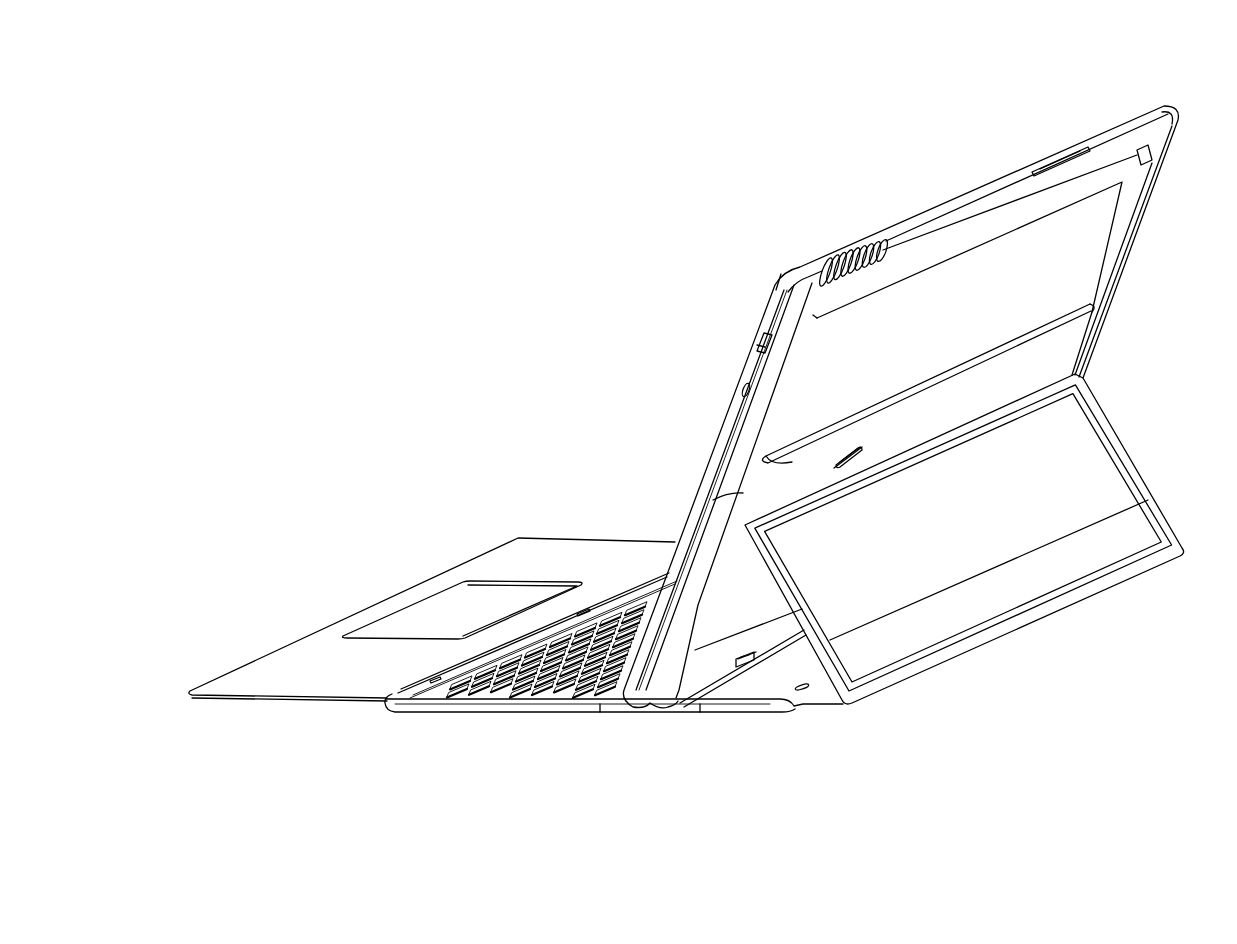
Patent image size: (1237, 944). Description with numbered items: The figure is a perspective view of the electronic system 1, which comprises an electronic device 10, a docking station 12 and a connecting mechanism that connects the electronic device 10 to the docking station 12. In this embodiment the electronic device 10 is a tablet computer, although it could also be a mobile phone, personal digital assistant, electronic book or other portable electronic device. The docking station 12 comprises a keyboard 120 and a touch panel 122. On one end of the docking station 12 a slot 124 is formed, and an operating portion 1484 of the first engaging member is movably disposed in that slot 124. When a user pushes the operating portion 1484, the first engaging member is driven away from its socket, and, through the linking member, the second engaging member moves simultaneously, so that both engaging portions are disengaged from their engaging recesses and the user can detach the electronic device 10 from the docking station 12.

The electronic system 1 is at (368, 150).
The electronic device 10 is at (946, 205).
The docking station 12 is at (1110, 428).
The keyboard 120 is at (623, 600).
The touch panel 122 is at (443, 613).
The slot 124 is at (850, 443).
The operating portion 1484 is at (850, 467).